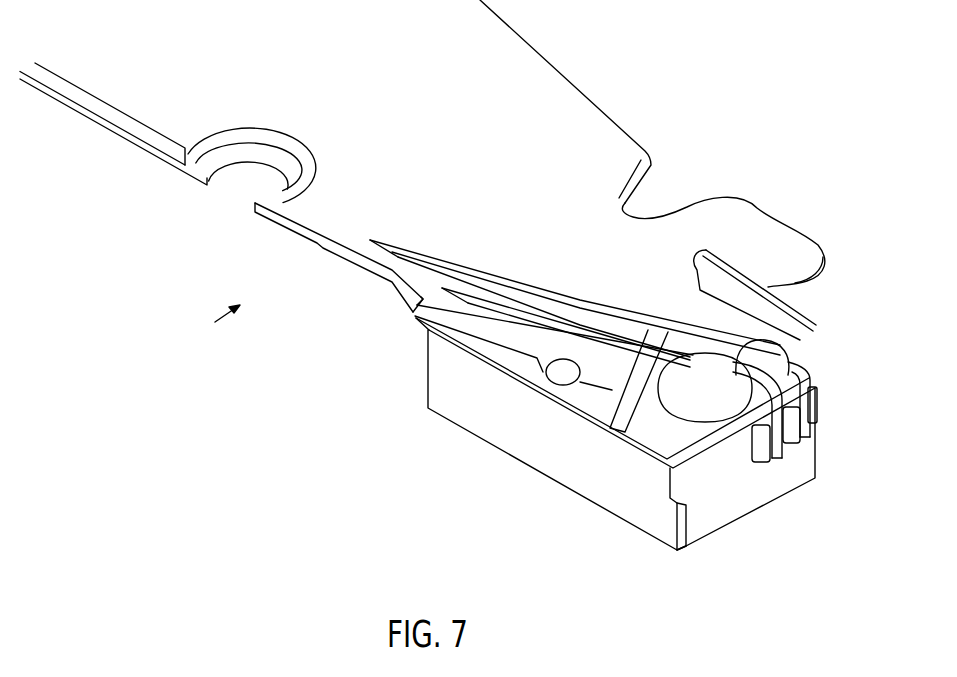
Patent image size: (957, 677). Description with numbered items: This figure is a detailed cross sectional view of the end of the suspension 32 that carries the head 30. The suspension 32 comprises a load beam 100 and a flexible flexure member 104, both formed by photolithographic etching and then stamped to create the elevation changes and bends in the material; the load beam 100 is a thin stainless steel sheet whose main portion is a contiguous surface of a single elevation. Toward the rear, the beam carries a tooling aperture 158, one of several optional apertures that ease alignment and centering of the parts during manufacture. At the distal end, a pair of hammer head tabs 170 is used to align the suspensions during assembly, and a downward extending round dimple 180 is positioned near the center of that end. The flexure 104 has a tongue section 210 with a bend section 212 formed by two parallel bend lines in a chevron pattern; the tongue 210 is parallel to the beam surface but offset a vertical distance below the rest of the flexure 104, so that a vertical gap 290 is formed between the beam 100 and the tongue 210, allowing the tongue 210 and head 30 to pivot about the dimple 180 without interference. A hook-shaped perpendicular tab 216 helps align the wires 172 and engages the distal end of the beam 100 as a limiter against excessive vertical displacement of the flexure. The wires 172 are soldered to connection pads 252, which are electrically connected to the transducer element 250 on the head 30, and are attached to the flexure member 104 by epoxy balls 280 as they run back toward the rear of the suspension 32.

The head 30 is at (522, 452).
The suspension 32 is at (213, 331).
The load beam 100 is at (384, 114).
The flexure member 104 is at (185, 175).
The tooling aperture 158 is at (222, 128).
The hammer head tabs 170 is at (773, 212).
The wires 172 is at (512, 308).
The dimple 180 is at (550, 374).
The tongue section 210 is at (430, 377).
The bend section 212 is at (666, 406).
The perpendicular tab 216 is at (815, 347).
The transducer element 250 is at (692, 552).
The connection pads 252 is at (770, 457).
The epoxy balls 280 is at (738, 368).
The vertical gap 290 is at (427, 303).